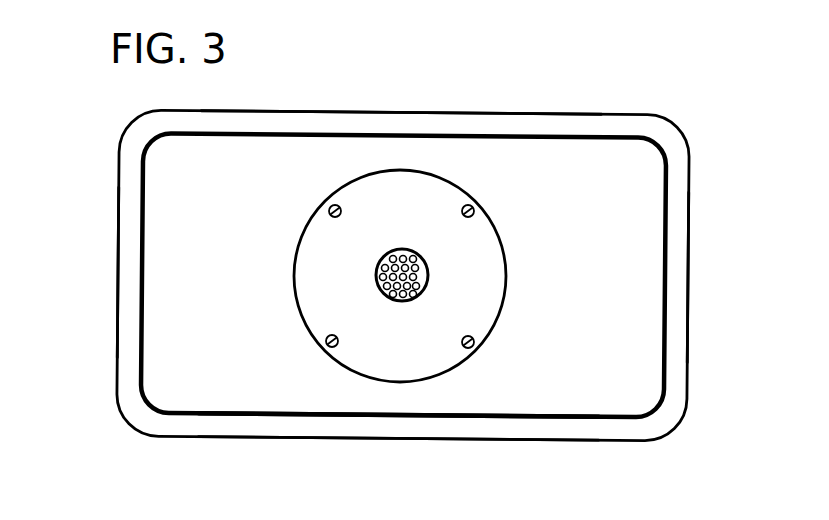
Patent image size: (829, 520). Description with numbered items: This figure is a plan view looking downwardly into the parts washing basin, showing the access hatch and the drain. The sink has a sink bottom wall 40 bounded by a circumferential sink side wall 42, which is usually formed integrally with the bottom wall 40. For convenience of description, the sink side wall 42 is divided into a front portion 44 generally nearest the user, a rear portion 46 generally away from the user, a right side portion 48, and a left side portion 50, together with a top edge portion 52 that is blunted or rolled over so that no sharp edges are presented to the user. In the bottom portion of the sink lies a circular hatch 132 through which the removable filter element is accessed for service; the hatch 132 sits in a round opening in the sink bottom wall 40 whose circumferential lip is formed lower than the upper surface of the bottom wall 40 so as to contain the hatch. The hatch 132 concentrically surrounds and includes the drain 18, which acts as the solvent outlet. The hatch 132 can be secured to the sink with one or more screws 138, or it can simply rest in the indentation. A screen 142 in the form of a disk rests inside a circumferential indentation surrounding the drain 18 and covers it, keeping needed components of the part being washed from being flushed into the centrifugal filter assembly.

The drain 18 is at (402, 250).
The sink bottom wall 40 is at (253, 388).
The circumferential sink side wall 42 is at (117, 300).
The front portion 44 is at (445, 440).
The rear portion 46 is at (528, 114).
The right side portion 48 is at (690, 258).
The left side portion 50 is at (117, 210).
The top edge portion 52 is at (140, 147).
The hatch 132 is at (505, 250).
The screws 138 is at (330, 210).
The screen 142 is at (417, 290).